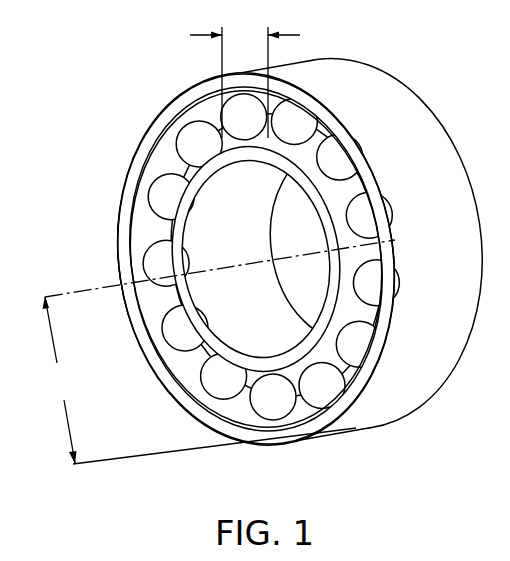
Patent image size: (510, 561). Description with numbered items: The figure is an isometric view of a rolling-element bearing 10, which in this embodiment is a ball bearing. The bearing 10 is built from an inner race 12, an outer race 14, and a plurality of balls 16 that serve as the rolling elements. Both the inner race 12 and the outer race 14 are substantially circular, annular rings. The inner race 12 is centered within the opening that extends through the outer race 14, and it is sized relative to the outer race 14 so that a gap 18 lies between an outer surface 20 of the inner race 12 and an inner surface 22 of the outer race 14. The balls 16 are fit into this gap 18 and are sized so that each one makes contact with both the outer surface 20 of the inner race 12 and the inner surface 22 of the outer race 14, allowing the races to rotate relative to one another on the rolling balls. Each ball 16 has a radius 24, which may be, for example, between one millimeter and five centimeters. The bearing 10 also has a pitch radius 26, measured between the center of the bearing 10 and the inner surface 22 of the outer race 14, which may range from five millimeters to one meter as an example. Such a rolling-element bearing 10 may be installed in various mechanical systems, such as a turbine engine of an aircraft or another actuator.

The rolling-element bearing 10 is at (108, 109).
The inner race 12 is at (247, 152).
The outer race 14 is at (450, 158).
The balls 16 is at (294, 120).
The gap 18 is at (307, 410).
The outer surface of the inner race 20 is at (337, 247).
The inner surface of the outer race 22 is at (143, 258).
The radius of the balls 24 is at (245, 81).
The pitch radius 26 is at (200, 380).